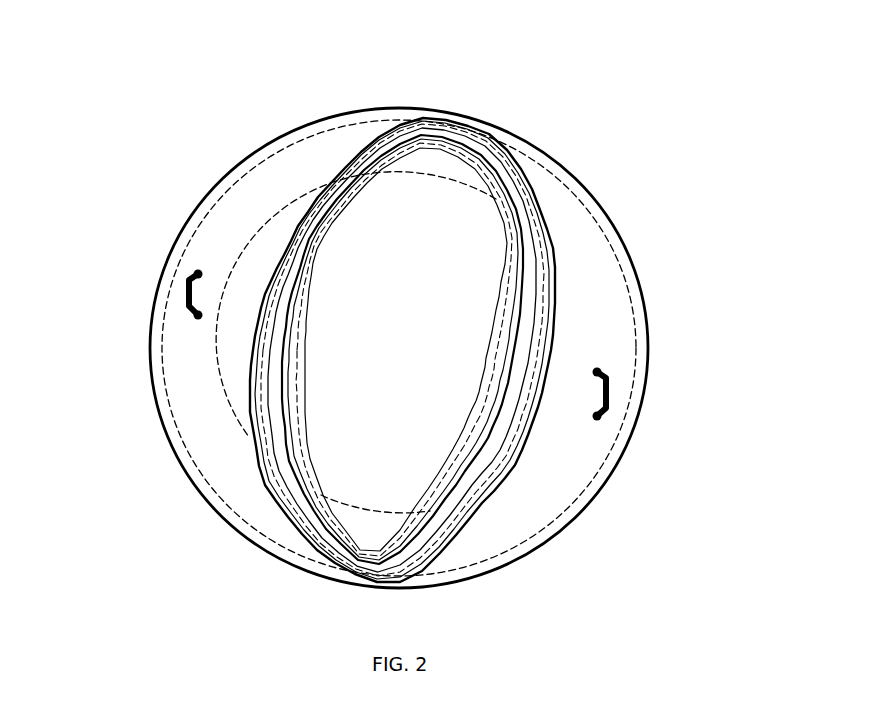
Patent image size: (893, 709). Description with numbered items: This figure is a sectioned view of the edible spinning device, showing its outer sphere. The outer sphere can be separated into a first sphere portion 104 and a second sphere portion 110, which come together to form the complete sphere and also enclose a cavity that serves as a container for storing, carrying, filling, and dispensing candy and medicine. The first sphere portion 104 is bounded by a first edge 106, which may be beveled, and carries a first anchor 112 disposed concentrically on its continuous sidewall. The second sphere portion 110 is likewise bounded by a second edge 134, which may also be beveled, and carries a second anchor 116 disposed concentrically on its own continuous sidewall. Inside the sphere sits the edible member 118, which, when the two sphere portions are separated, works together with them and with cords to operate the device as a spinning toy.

The first sphere portion 104 is at (142, 368).
The first edge 106 is at (368, 142).
The second sphere portion 110 is at (646, 418).
The first anchor 112 is at (177, 284).
The second anchor 116 is at (615, 383).
The edible member 118 is at (282, 210).
The second edge 134 is at (547, 223).